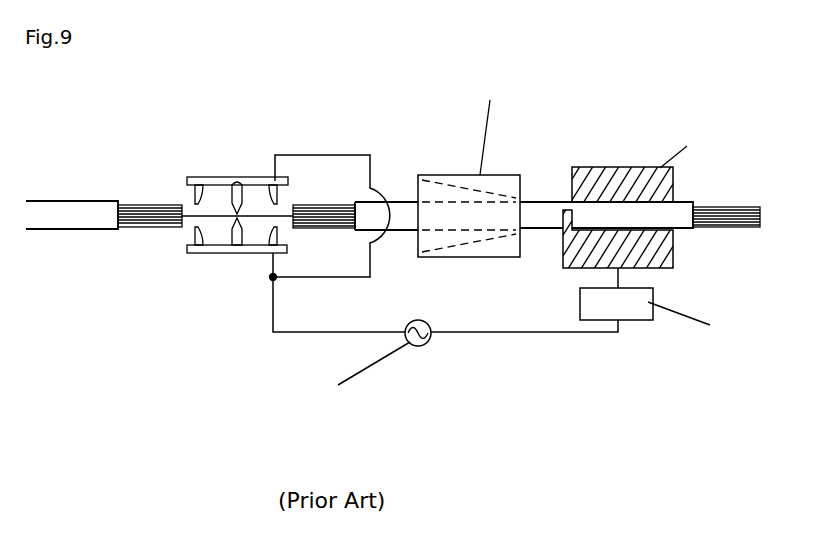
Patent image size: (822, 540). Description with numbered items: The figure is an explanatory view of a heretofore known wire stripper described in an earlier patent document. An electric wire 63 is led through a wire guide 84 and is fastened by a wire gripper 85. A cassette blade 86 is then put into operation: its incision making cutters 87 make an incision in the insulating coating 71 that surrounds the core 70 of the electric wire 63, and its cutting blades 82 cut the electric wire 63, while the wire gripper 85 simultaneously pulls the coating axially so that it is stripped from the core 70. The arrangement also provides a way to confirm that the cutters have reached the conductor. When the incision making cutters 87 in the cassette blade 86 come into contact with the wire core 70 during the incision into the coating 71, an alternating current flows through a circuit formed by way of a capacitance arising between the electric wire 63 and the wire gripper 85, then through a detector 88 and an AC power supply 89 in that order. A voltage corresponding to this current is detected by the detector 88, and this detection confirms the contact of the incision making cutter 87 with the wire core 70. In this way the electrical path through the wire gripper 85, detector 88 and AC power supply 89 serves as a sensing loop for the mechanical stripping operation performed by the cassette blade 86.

The electric wire 63 is at (47, 200).
The insulating coating 71 is at (90, 200).
The core 70 is at (143, 228).
The cassette blade 86 is at (188, 178).
The incision making cutters 87 is at (205, 182).
The cutting blades 82 is at (238, 182).
The wire guide 84 is at (468, 175).
The wire gripper 85 is at (603, 167).
The detector 88 is at (648, 320).
The AC power supply 89 is at (430, 323).